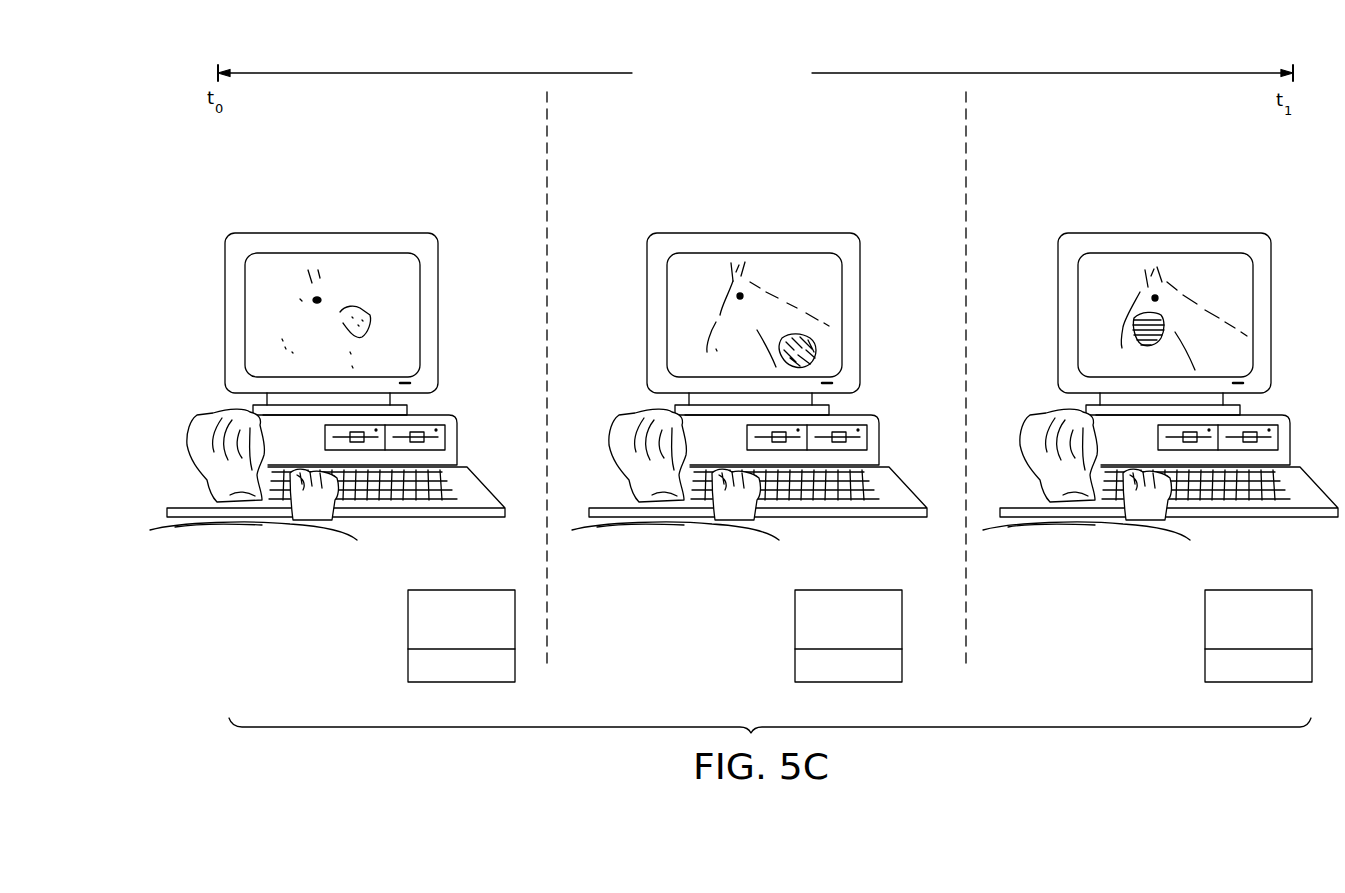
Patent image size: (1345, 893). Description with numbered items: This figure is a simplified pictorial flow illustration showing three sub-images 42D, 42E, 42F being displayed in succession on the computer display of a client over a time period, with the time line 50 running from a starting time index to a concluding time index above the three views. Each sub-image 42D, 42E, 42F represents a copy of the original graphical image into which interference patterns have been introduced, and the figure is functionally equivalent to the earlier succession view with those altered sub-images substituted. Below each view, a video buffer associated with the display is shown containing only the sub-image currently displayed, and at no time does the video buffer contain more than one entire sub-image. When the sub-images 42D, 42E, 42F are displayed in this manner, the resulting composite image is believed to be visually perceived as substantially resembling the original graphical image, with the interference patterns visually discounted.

The sub-image 42D is at (258, 312).
The sub-image 42E is at (730, 315).
The sub-image 42F is at (1115, 315).
The time line 50 is at (1055, 72).